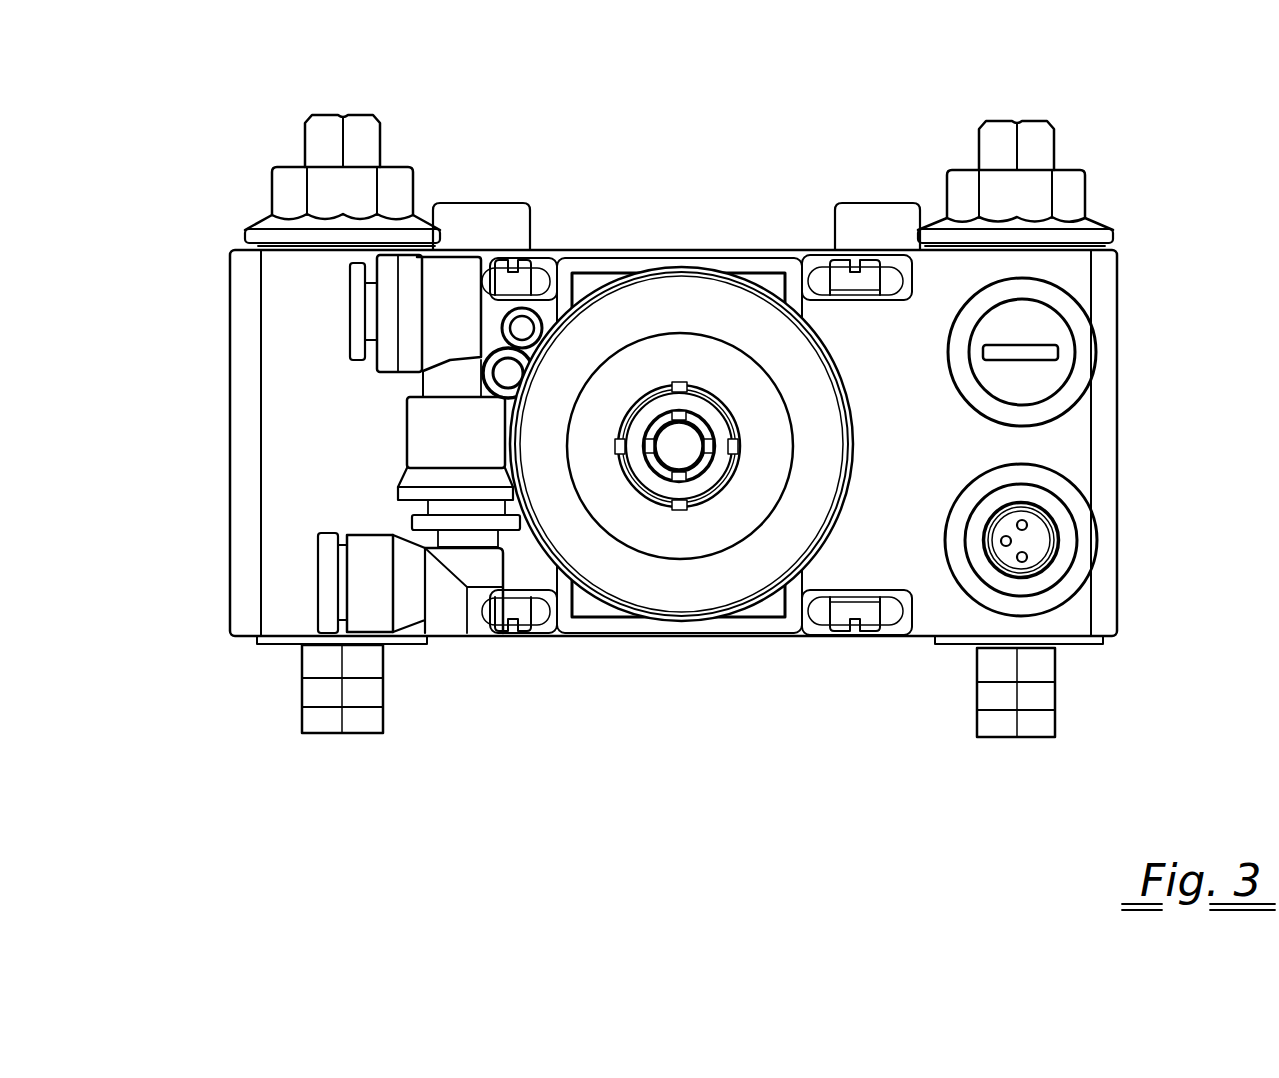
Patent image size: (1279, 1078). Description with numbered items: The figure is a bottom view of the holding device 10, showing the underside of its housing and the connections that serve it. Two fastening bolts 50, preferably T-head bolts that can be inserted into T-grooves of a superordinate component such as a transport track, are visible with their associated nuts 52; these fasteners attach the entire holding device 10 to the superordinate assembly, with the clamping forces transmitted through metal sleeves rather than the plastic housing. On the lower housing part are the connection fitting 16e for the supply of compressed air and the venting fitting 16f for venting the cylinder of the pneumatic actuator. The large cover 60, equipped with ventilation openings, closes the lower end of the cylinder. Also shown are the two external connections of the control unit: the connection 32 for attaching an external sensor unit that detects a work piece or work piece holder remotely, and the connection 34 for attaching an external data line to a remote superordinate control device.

The holding device 10 is at (1145, 108).
The nut 52 is at (293, 185).
The fastening bolt 50 is at (352, 720).
The connection fitting 16e is at (447, 282).
The venting fitting 16f is at (427, 432).
The cover 60 is at (663, 307).
The connection 32 is at (1047, 327).
The connection 34 is at (1085, 540).